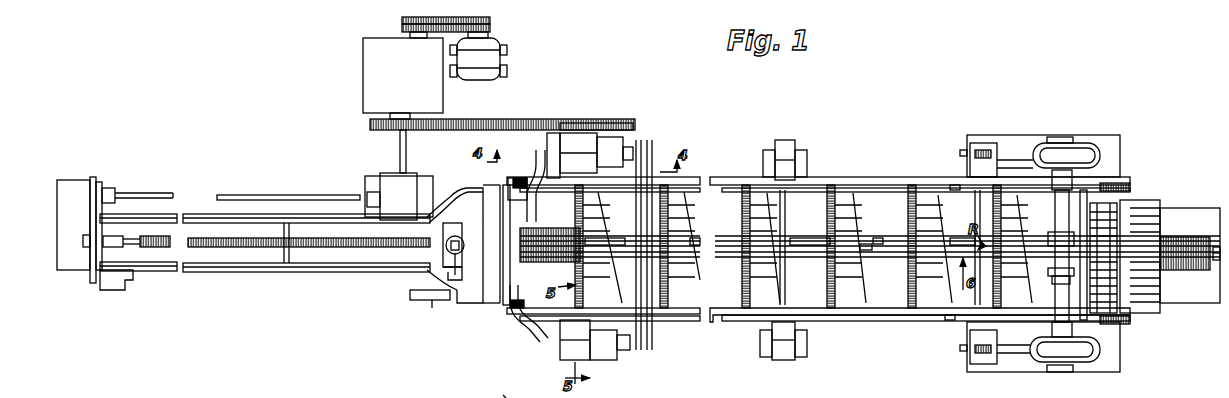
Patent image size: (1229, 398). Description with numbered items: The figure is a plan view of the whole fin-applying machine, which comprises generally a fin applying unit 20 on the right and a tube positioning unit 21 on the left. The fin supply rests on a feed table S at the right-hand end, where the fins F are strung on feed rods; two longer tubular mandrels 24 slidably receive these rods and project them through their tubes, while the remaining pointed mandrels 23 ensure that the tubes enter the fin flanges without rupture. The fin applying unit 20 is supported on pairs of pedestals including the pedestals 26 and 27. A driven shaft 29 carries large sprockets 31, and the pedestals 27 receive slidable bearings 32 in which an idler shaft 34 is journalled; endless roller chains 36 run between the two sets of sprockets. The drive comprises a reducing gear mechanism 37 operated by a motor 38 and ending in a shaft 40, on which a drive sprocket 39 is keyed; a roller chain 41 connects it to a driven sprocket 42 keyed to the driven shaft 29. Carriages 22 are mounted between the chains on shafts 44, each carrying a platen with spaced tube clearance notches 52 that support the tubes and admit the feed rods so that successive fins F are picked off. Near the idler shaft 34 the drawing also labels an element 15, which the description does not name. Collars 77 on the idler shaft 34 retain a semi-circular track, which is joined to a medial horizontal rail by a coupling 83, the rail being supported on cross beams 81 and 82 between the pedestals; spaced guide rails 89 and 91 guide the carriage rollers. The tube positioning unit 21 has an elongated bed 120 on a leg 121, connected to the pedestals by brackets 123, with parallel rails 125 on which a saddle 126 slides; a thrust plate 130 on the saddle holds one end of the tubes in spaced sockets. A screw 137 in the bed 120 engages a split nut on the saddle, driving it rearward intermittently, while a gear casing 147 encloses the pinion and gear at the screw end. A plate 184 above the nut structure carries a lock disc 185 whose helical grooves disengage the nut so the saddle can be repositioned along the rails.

The gear casing 147 is at (93, 278).
The leg 121 is at (122, 290).
The screw 137 is at (223, 250).
The tube positioning unit 21 is at (275, 274).
The parallel rails 125 is at (334, 274).
The elongated bed 120 is at (397, 277).
The lock disc 185 is at (446, 247).
The plate 184 is at (462, 282).
The large sprockets 31 is at (510, 314).
The brackets 123 is at (535, 172).
The thrust plate 130 is at (503, 395).
The saddle 126 is at (466, 389).
The driven shaft 29 is at (566, 360).
The reducing gear mechanism 37 is at (426, 65).
The motor 38 is at (478, 56).
The drive sprocket 39 is at (398, 128).
The shaft 40 is at (406, 151).
The roller chain 41 is at (532, 122).
The driven sprocket 42 is at (607, 123).
The carriages 22 is at (672, 314).
The shaft 44 is at (745, 197).
The cross beam 81 is at (785, 212).
The cross beam 82 is at (981, 213).
The pointed mandrels 23 is at (879, 262).
The tubular mandrels 24 is at (893, 262).
The pedestals 26 is at (805, 139).
The fin applying unit 20 is at (890, 160).
The guide rail 89 is at (957, 185).
The guide rail 91 is at (946, 322).
The pedestals 27 is at (1045, 120).
The slidable bearings 32 is at (1073, 152).
The idler shaft 34 is at (1067, 136).
The carriage 15 is at (1066, 247).
The collars 77 is at (1058, 280).
The coupling 83 is at (1048, 294).
The endless chains 36 is at (1121, 181).
The tube clearance notches 52 is at (1150, 205).
The feed table S is at (1190, 255).
The fin F is at (1183, 237).